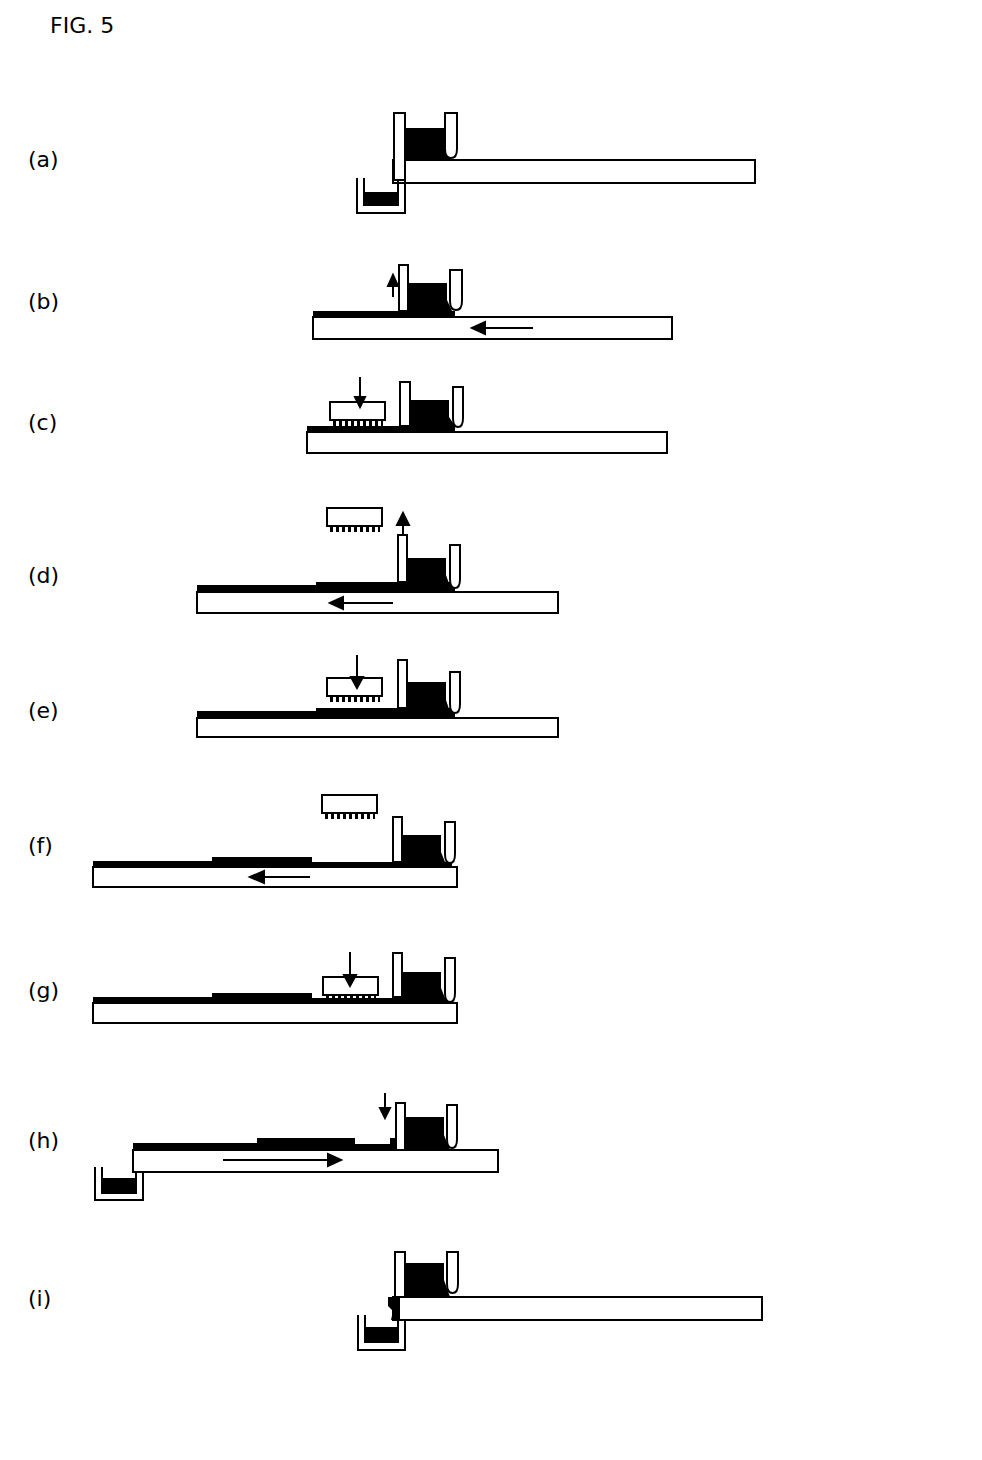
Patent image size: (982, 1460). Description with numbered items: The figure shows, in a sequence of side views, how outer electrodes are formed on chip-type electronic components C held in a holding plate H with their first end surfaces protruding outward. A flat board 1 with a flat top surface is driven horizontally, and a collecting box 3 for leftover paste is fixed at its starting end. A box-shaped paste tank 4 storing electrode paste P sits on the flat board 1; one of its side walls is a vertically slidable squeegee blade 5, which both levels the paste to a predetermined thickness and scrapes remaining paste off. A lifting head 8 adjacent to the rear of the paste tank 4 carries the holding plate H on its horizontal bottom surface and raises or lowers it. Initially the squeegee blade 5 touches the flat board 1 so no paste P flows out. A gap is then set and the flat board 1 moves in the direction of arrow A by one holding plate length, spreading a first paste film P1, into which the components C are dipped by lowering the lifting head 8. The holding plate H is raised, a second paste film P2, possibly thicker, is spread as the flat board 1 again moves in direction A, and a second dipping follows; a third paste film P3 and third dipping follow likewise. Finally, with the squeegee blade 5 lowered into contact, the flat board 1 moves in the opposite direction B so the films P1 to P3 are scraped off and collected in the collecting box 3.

The flat board 1 is at (590, 170).
The collecting box 3 is at (357, 193).
The paste tank 4 is at (462, 130).
The squeegee blade 5 is at (394, 128).
The lifting head 8 is at (346, 401).
The holding plate H is at (334, 407).
The electrode paste P is at (428, 122).
The first paste film P1 is at (355, 311).
The second paste film P2 is at (330, 582).
The third paste film P3 is at (330, 862).
The arrow A direction A is at (522, 334).
The opposite direction B is at (275, 1168).
The chip-type electronic components C is at (352, 536).